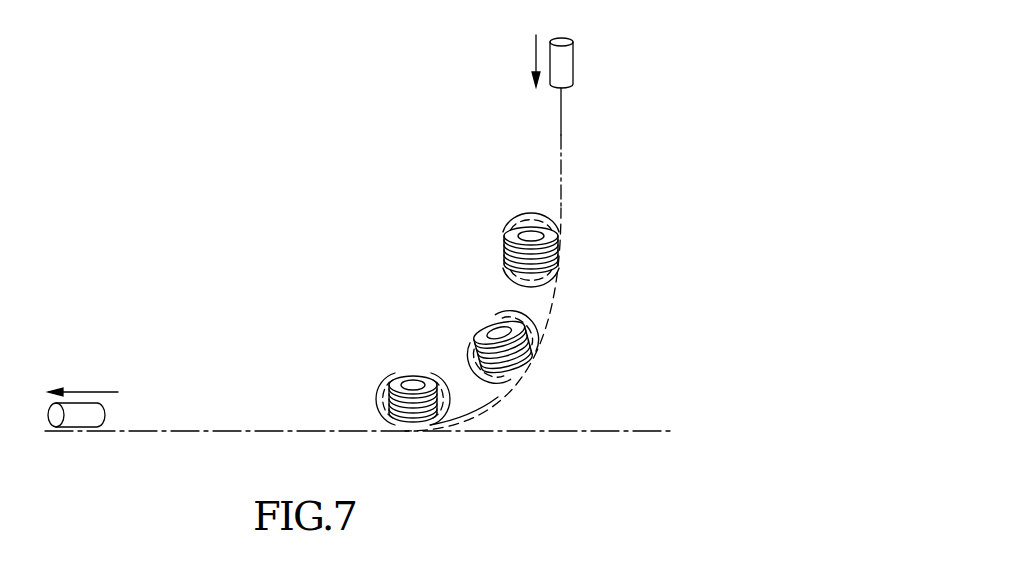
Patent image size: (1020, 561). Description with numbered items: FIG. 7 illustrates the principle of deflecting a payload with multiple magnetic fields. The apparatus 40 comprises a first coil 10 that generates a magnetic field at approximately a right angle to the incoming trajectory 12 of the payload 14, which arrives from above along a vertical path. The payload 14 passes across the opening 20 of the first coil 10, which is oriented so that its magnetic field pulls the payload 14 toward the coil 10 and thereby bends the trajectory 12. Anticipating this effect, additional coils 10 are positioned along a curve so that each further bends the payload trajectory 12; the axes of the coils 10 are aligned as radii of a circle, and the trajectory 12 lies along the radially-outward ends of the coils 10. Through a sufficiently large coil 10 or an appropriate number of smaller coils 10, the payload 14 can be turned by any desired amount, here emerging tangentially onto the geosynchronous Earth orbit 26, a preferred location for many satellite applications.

The coil 10 is at (522, 321).
The trajectory 12 is at (561, 152).
The payload 14 is at (566, 63).
The opening 20 is at (586, 250).
The geosynchronous Earth orbit 26 is at (617, 429).
The apparatus 40 is at (345, 260).